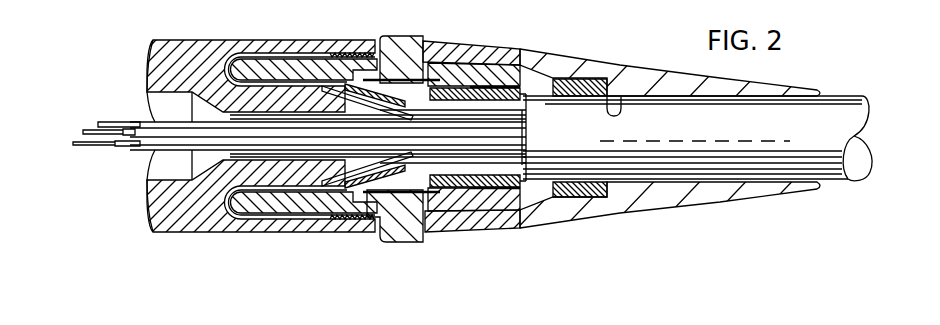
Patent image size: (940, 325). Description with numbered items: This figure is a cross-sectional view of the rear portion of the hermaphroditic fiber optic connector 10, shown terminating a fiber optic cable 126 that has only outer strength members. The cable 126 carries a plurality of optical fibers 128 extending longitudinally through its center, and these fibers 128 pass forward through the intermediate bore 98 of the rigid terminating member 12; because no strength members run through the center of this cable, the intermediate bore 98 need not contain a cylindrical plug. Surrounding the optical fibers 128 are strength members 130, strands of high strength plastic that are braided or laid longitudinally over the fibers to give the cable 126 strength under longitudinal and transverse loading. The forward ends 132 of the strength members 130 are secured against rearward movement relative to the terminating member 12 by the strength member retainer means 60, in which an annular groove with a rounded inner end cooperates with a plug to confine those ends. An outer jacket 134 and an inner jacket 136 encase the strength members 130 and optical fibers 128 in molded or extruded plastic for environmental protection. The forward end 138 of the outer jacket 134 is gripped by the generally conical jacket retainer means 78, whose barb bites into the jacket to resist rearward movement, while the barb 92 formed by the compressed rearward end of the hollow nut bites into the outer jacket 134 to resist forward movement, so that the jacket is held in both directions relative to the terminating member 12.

The hermaphroditic fiber optic connector 10 is at (605, 36).
The terminating member 12 is at (224, 37).
The strength member retainer means 60 is at (323, 40).
The jacket retainer means 78 is at (377, 77).
The barb 92 is at (621, 98).
The intermediate bore 98 is at (152, 91).
The fiber optic cable 126 is at (844, 91).
The optical fibers 128 is at (143, 131).
The strength members 130 is at (515, 110).
The forward ends of the strength members 132 is at (266, 50).
The outer jacket 134 is at (516, 178).
The inner jacket 136 is at (409, 110).
The forward end of the outer jacket 138 is at (441, 195).